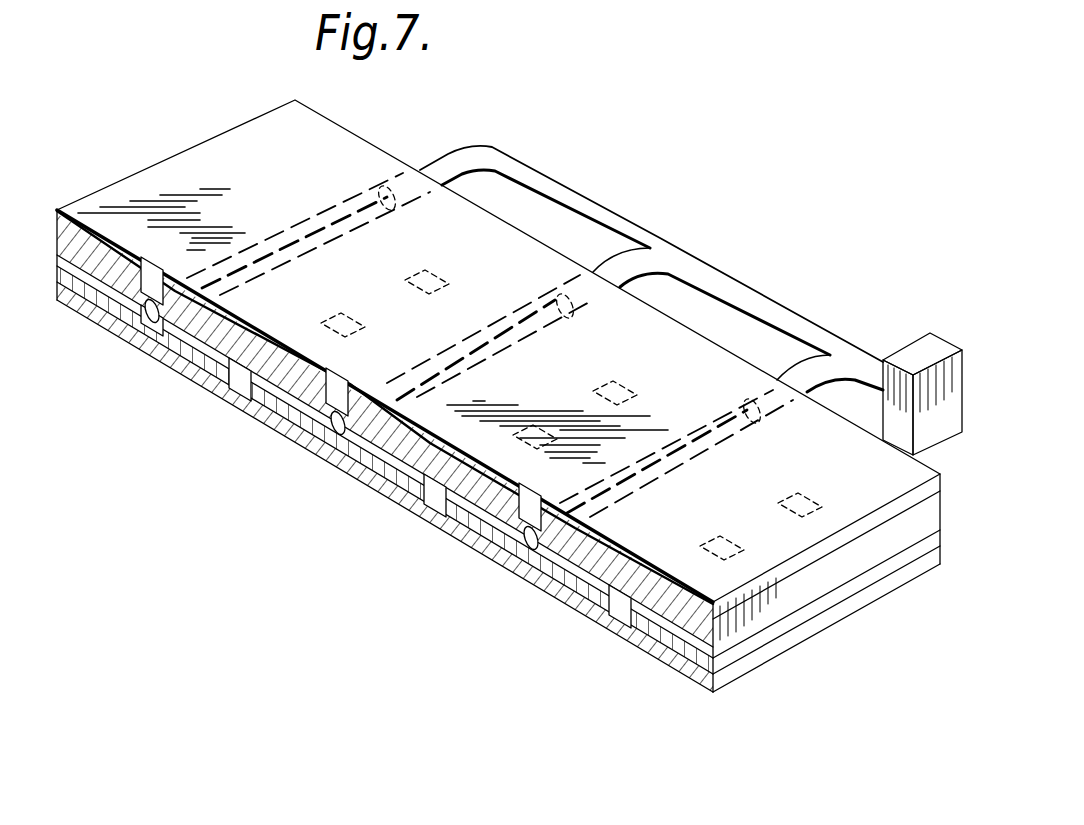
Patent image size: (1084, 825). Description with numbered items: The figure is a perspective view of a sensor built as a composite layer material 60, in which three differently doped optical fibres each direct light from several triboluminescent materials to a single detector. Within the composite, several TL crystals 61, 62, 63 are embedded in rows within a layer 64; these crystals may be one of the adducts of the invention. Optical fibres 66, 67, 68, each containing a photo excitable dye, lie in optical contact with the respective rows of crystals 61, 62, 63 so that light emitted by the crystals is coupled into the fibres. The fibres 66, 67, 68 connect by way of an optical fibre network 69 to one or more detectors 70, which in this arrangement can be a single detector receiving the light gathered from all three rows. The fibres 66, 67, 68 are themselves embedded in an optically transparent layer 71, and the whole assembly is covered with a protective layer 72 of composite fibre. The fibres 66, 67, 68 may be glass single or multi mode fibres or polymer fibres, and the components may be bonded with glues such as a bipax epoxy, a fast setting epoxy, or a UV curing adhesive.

The composite layer material 60 is at (398, 138).
The TL crystal 61 is at (145, 340).
The TL crystal 62 is at (323, 448).
The TL crystal 63 is at (513, 562).
The layer 64 is at (445, 455).
The optical fibre 66 is at (162, 325).
The optical fibre 67 is at (347, 455).
The optical fibre 68 is at (565, 585).
The optical fibre network 69 is at (720, 273).
The detector 70 is at (930, 333).
The optically transparent layer 71 is at (696, 637).
The protective layer 72 is at (807, 563).